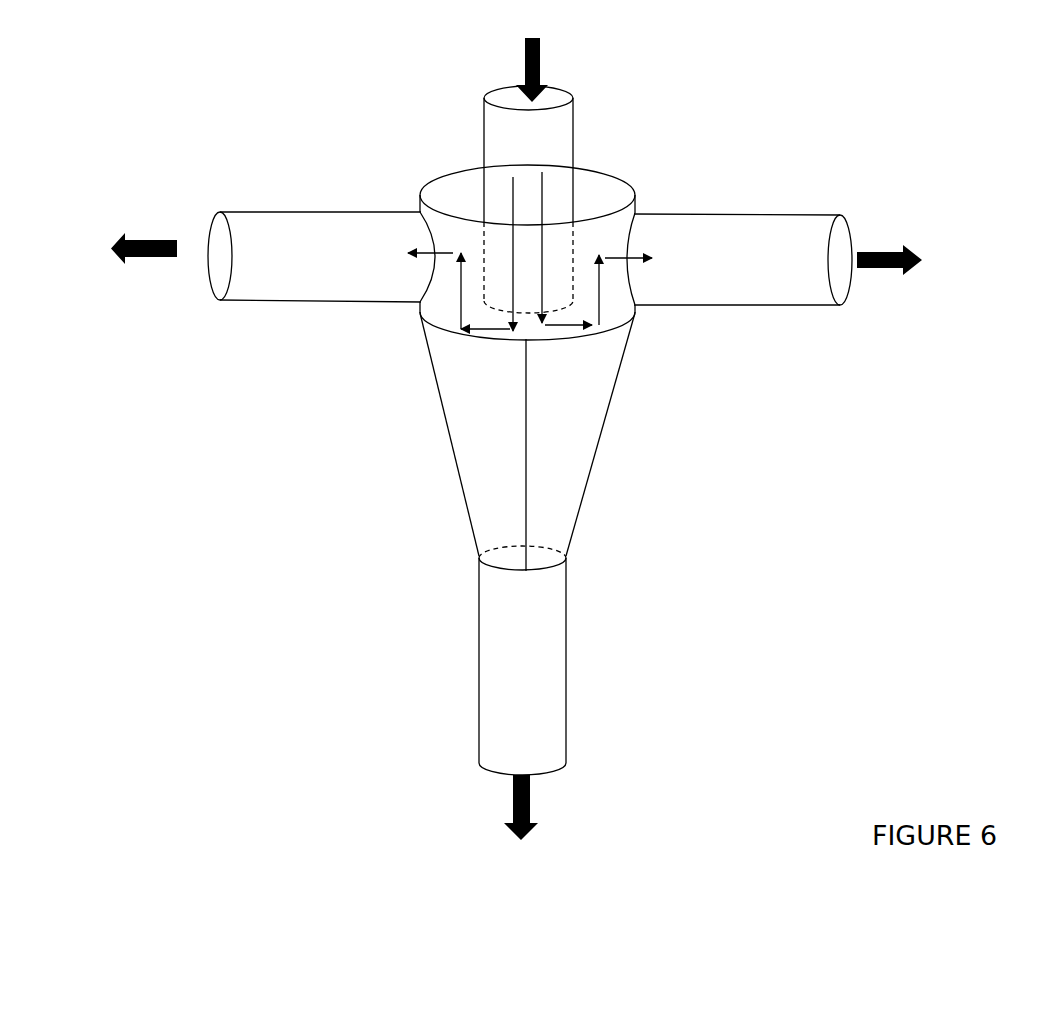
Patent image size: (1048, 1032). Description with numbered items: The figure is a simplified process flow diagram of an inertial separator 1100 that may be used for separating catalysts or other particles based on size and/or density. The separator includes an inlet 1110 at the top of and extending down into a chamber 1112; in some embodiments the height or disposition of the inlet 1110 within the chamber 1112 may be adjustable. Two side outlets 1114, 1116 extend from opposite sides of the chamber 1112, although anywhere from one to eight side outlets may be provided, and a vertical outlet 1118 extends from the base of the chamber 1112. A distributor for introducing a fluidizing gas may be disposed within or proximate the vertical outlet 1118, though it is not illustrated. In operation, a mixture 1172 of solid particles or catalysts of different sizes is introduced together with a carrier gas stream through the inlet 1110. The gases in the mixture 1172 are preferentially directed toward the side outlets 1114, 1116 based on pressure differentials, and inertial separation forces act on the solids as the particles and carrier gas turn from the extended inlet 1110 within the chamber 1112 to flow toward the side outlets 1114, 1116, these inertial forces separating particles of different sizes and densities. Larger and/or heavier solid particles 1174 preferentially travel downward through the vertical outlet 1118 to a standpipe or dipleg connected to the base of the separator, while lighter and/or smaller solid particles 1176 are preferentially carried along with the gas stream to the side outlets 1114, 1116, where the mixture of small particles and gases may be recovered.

The inertial separator 1100 is at (358, 565).
The inlet 1110 is at (575, 129).
The chamber 1112 is at (612, 175).
The side outlet 1114 is at (290, 303).
The side outlet 1116 is at (765, 308).
The vertical outlet 1118 is at (566, 663).
The mixture 1172 is at (551, 70).
The larger and/or heavier solid particles 1174 is at (501, 807).
The lighter and/or smaller solid particles 1176 is at (519, 266).